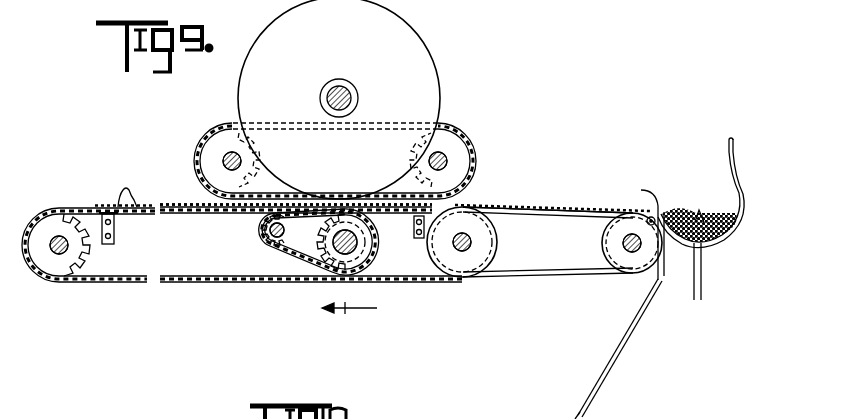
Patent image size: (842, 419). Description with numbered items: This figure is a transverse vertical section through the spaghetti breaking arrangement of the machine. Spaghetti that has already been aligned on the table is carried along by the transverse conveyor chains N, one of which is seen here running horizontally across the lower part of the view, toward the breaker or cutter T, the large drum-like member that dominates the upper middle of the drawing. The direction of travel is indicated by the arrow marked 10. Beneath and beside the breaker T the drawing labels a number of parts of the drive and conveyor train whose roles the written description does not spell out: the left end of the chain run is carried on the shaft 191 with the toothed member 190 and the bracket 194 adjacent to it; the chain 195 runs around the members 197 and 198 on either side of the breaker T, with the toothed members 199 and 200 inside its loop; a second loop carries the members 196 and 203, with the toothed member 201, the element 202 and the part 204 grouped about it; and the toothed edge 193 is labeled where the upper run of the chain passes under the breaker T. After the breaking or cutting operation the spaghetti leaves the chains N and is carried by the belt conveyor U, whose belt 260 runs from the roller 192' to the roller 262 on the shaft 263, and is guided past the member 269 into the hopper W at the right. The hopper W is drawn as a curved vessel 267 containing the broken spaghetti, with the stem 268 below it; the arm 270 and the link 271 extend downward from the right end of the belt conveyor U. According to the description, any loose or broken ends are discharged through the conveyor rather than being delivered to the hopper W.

The breakers or cutters T is at (427, 48).
The transverse conveyor chains N is at (178, 300).
The belt conveyors U is at (578, 212).
The hoppers W is at (697, 176).
The direction of travel 10 is at (349, 320).
The gear 190 is at (100, 278).
The sprocket shaft 191 is at (55, 256).
The roller 192' is at (455, 267).
The chain teeth 193 is at (488, 206).
The pad 194 is at (407, 201).
The chain 195 is at (443, 125).
The sprocket 196 is at (300, 271).
The sprocket 197 is at (215, 155).
The sprocket 198 is at (455, 161).
The gear 199 is at (231, 153).
The gear 200 is at (445, 157).
The gear 201 is at (273, 258).
The gear 202 is at (333, 260).
The sprocket 203 is at (268, 234).
The shaft 204 is at (358, 250).
The belt 260 is at (498, 230).
The roller 262 is at (606, 250).
The shaft 263 is at (632, 252).
The container 267 is at (729, 142).
The stem 268 is at (700, 297).
The guide 269 is at (637, 225).
The arm 270 is at (623, 343).
The link 271 is at (551, 398).